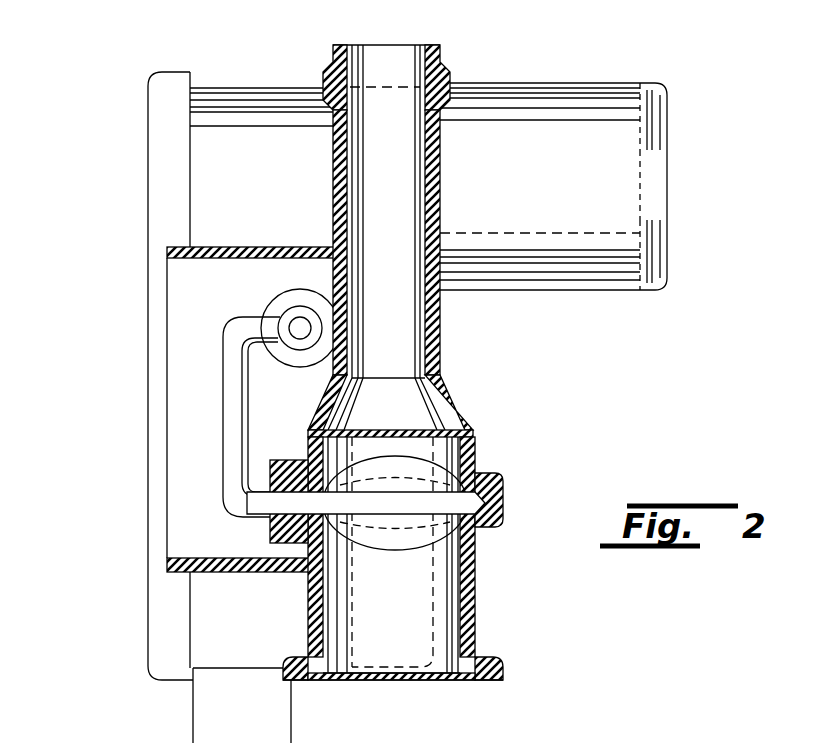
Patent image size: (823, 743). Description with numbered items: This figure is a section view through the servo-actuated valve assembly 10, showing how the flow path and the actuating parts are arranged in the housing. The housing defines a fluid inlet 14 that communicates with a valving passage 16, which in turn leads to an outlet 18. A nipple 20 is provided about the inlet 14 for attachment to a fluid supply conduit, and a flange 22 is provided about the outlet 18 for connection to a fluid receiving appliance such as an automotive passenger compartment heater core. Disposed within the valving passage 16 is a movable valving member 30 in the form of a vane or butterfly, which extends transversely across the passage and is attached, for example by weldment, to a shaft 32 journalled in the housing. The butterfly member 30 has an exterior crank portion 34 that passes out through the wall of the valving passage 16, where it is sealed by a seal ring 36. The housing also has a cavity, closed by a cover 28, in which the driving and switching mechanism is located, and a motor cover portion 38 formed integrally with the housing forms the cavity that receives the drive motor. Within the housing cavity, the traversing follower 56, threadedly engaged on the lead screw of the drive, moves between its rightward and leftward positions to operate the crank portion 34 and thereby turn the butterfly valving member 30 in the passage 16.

The valve assembly 10 is at (145, 401).
The fluid inlet 14 is at (410, 48).
The valving passage 16 is at (467, 422).
The outlet 18 is at (462, 670).
The nipple 20 is at (312, 90).
The flange 22 is at (505, 668).
The cover 28 is at (148, 618).
The movable valving member 30 is at (400, 575).
The shaft 32 is at (478, 470).
The exterior crank portion 34 is at (253, 410).
The seal ring 36 is at (298, 488).
The motor cover portion 38 is at (576, 290).
The traversing follower 56 is at (262, 300).